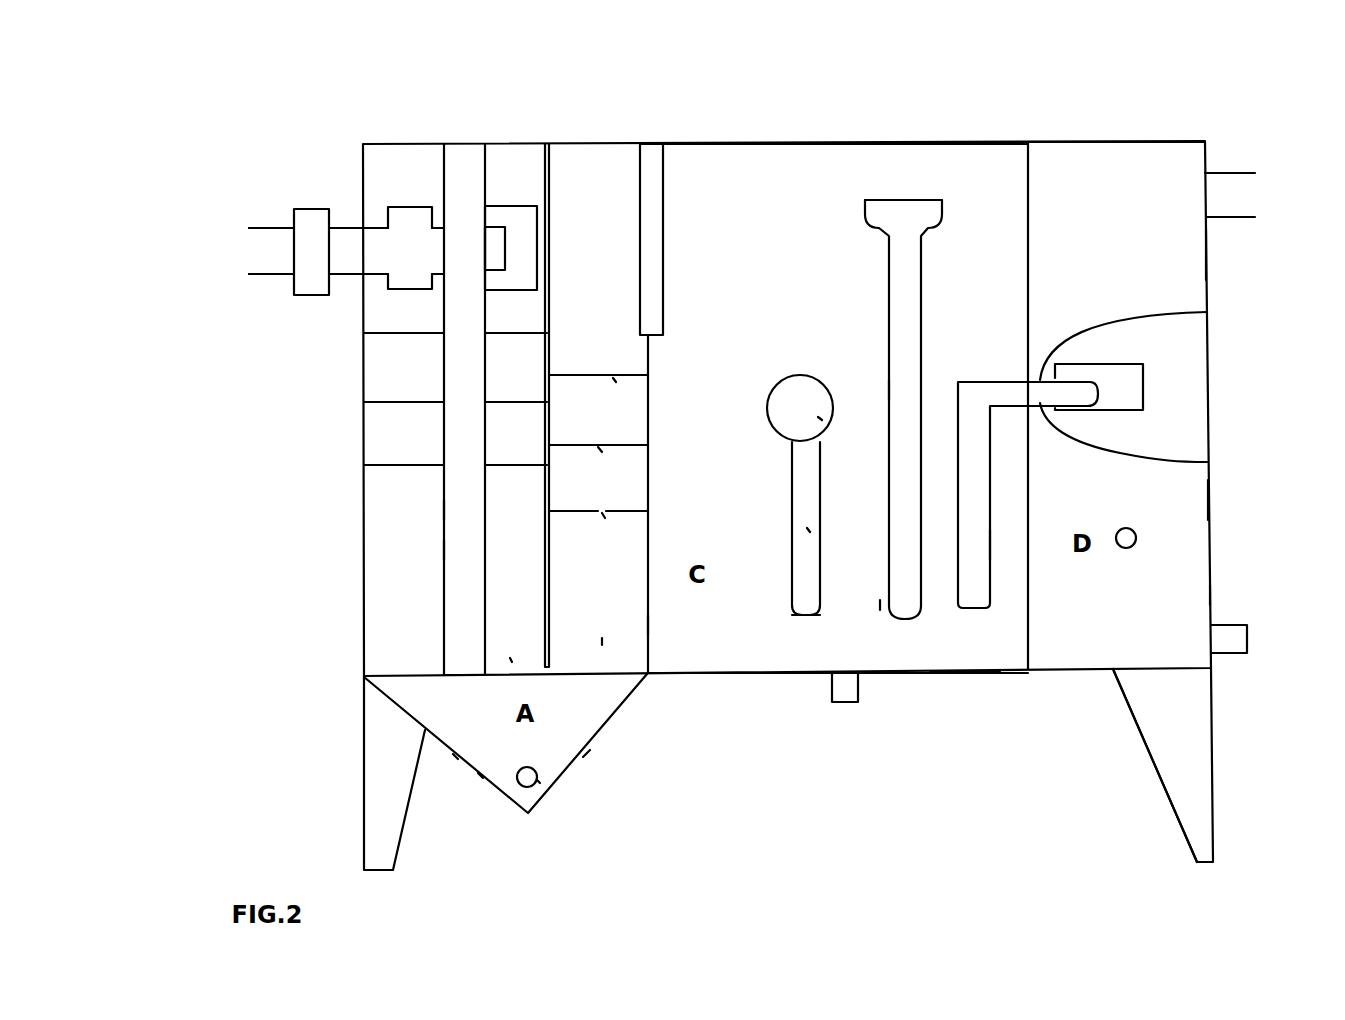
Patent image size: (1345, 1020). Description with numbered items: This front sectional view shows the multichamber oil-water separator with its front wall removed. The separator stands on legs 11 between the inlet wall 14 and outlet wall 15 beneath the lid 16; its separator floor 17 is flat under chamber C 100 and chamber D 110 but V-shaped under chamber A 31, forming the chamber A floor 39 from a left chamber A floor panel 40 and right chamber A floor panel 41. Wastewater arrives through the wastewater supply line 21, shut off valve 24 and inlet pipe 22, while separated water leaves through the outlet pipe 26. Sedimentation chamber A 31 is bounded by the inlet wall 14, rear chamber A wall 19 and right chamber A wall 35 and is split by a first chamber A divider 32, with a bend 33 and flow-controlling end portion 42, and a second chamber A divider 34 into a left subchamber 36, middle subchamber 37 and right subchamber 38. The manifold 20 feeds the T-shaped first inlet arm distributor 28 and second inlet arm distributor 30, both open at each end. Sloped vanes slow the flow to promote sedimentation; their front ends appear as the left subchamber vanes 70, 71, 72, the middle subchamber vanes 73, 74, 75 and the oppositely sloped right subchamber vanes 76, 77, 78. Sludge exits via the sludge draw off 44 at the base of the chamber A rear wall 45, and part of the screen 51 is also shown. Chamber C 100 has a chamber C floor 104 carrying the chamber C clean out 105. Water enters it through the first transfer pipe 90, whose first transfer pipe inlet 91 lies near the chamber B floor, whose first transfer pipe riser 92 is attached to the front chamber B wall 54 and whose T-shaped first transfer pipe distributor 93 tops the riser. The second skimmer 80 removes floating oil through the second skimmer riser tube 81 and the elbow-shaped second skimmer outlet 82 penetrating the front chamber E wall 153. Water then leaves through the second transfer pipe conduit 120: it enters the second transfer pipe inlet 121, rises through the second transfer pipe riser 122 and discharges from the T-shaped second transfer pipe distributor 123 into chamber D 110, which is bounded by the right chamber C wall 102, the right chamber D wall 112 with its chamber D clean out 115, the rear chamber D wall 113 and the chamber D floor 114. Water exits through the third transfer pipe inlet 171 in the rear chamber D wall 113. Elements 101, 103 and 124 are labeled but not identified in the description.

The legs 11 is at (363, 787).
The inlet wall 14 is at (363, 602).
The outlet wall 15 is at (1209, 502).
The lid 16 is at (838, 143).
The separator floor 17 is at (977, 672).
The rear chamber A wall 19 is at (593, 183).
The manifold 20 is at (393, 252).
The wastewater supply line 21 is at (253, 263).
The inlet pipe 22 is at (340, 220).
The shut off valve 24 is at (307, 208).
The outlet pipe 26 is at (1232, 173).
The first inlet arm distributor 28 is at (407, 205).
The second inlet arm distributor 30 is at (517, 204).
The chamber A 31 is at (535, 782).
The first chamber A divider 32 is at (444, 510).
The bend 33 is at (444, 550).
The second chamber A divider 34 is at (545, 192).
The right chamber A wall 35 is at (650, 627).
The left subchamber 36 is at (402, 650).
The middle subchamber 37 is at (510, 658).
The right subchamber 38 is at (602, 638).
The chamber A floor 39 is at (458, 758).
The left chamber A floor panel 40 is at (481, 778).
The right chamber A floor panel 41 is at (585, 758).
The first chamber A divider end portion 42 is at (467, 633).
The sludge draw off 44 is at (555, 753).
The chamber A rear wall 45 is at (528, 167).
The screen 51 is at (640, 192).
The front chamber B wall 54 is at (898, 163).
The upper left subchamber vane 70 is at (400, 332).
The middle left subchamber vane 71 is at (409, 402).
The lower left subchamber vane 72 is at (411, 465).
The upper middle subchamber vane 73 is at (512, 334).
The middle middle subchamber vane 74 is at (512, 402).
The lower middle subchamber vane 75 is at (513, 466).
The upper right subchamber vane 76 is at (613, 378).
The middle right subchamber vane 77 is at (745, 673).
The lower right subchamber vane 78 is at (602, 513).
The second skimmer 80 is at (877, 198).
The second skimmer riser tube 81 is at (887, 390).
The second skimmer outlet 82 is at (886, 612).
The first transfer pipe 90 is at (787, 528).
The first transfer pipe inlet 91 is at (805, 618).
The first transfer pipe riser 92 is at (807, 528).
The first transfer pipe distributor 93 is at (818, 417).
The chamber C 100 is at (733, 183).
The partition wall 101 is at (650, 352).
The right chamber C wall 102 is at (1025, 217).
The bottom wall 103 is at (947, 672).
The chamber C floor 104 is at (598, 447).
The chamber C clean out 105 is at (848, 703).
The chamber D 110 is at (1210, 595).
The right chamber D wall 112 is at (1206, 255).
The rear chamber D wall 113 is at (1137, 213).
The chamber D floor 114 is at (1093, 668).
The chamber D clean out 115 is at (1247, 637).
The second transfer pipe conduit 120 is at (1207, 313).
The second transfer pipe inlet 121 is at (978, 610).
The second transfer pipe riser 122 is at (992, 545).
The second transfer pipe distributor 123 is at (1143, 386).
The nozzle lower wall 124 is at (1207, 461).
The front chamber E wall 153 is at (970, 240).
The third transfer pipe inlet 171 is at (1136, 539).